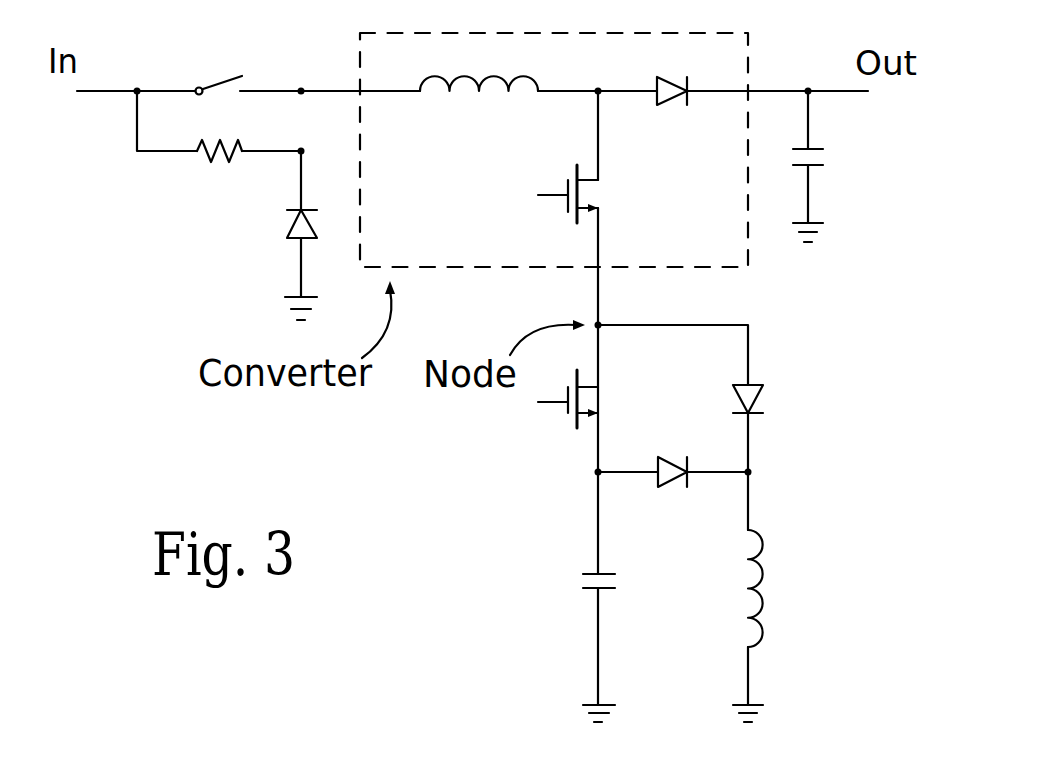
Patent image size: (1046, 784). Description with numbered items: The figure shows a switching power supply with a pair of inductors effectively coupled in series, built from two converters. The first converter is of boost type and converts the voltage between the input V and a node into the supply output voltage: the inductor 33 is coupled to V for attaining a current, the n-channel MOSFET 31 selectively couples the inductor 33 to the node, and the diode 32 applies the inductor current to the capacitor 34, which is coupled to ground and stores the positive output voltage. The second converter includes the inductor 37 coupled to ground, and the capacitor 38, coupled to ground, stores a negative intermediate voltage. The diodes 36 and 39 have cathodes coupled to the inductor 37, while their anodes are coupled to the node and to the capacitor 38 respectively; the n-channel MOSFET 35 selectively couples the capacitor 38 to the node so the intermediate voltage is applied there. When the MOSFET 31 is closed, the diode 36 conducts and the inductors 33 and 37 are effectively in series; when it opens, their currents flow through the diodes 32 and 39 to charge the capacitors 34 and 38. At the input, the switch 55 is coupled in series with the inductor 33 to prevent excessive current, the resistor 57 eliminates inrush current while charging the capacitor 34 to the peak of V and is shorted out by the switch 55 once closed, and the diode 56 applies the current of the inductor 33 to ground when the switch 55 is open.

The n-channel MOSFET 31 is at (577, 167).
The diode 32 is at (662, 104).
The inductor 33 is at (448, 96).
The capacitor 34 is at (818, 168).
The n-channel MOSFET 35 is at (578, 428).
The diode 36 is at (755, 418).
The inductor 37 is at (760, 638).
The capacitor 38 is at (612, 591).
The diode 39 is at (662, 485).
The switch 55 is at (221, 85).
The diode 56 is at (293, 243).
The resistor 57 is at (207, 165).